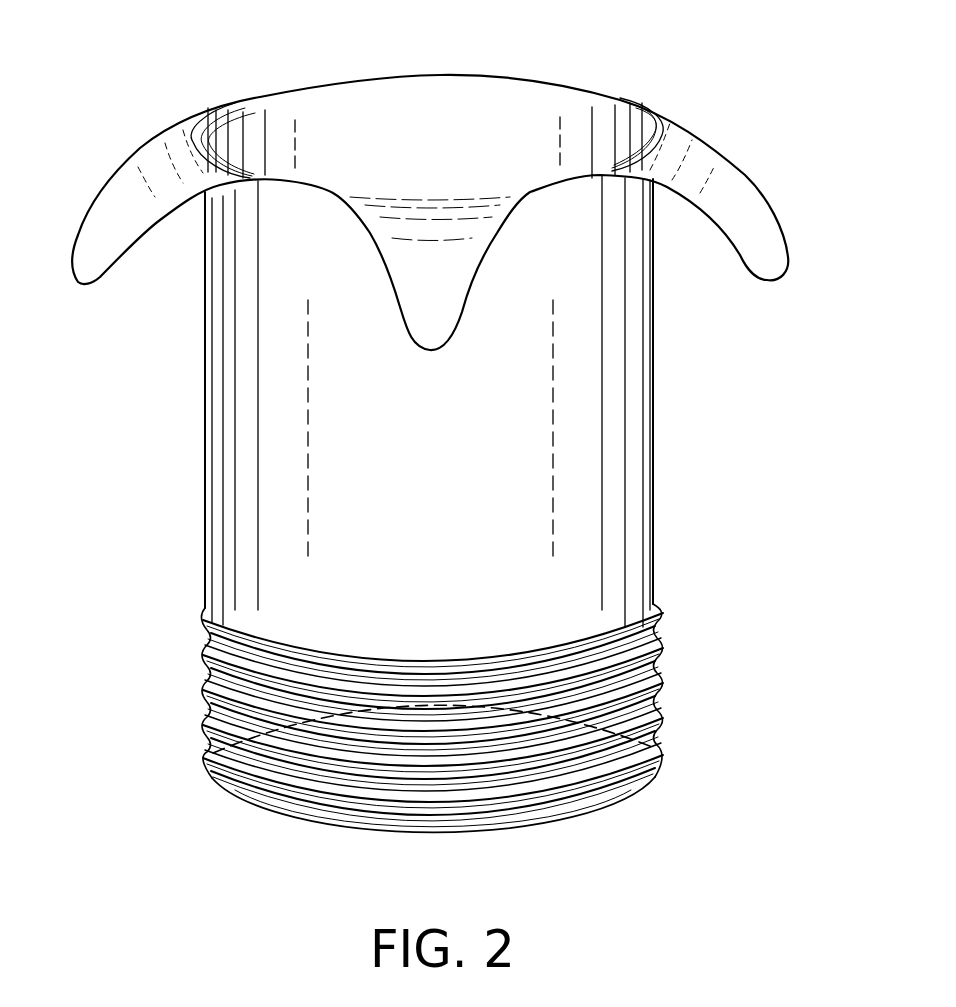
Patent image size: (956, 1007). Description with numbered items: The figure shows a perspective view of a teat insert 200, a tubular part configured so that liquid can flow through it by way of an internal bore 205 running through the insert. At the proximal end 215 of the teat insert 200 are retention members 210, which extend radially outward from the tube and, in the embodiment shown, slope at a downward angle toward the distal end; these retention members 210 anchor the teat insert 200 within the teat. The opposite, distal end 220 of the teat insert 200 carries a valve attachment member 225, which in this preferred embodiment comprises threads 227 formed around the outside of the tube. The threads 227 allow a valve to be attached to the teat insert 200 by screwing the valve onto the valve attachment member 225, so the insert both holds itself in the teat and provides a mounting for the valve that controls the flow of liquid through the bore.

The teat insert 200 is at (145, 68).
The internal bore 205 is at (422, 104).
The retention member 210 is at (707, 159).
The proximal end 215 is at (323, 271).
The distal end 220 is at (663, 730).
The valve attachment member 225 is at (682, 640).
The threads 227 is at (232, 677).